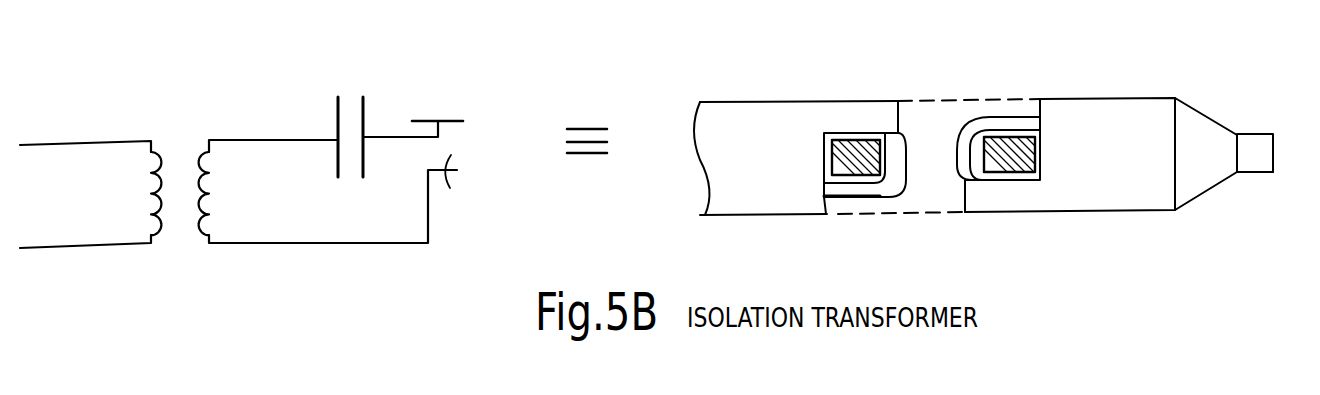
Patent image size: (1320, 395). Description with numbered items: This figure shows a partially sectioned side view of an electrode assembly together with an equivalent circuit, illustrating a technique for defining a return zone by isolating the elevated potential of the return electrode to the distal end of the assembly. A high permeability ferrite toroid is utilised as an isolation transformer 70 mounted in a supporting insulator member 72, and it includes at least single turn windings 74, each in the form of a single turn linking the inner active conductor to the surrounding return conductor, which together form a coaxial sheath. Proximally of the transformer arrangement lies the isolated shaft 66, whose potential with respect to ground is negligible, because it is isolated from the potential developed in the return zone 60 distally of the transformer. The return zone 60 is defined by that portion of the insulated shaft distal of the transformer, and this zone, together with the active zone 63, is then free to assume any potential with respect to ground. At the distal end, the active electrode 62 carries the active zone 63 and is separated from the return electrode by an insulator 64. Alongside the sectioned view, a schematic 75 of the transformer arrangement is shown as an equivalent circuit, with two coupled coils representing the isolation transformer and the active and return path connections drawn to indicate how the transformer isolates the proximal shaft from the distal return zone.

The return zone 60 is at (1130, 113).
The active electrode 62 is at (1257, 145).
The active zone 63 is at (1273, 172).
The insulator 64 is at (1192, 123).
The isolated shaft 66 is at (831, 110).
The isolation transformer 70 is at (870, 147).
The supporting insulator member 72 is at (1011, 100).
The windings 74 is at (965, 162).
The schematic of the transformer arrangement 75 is at (221, 317).